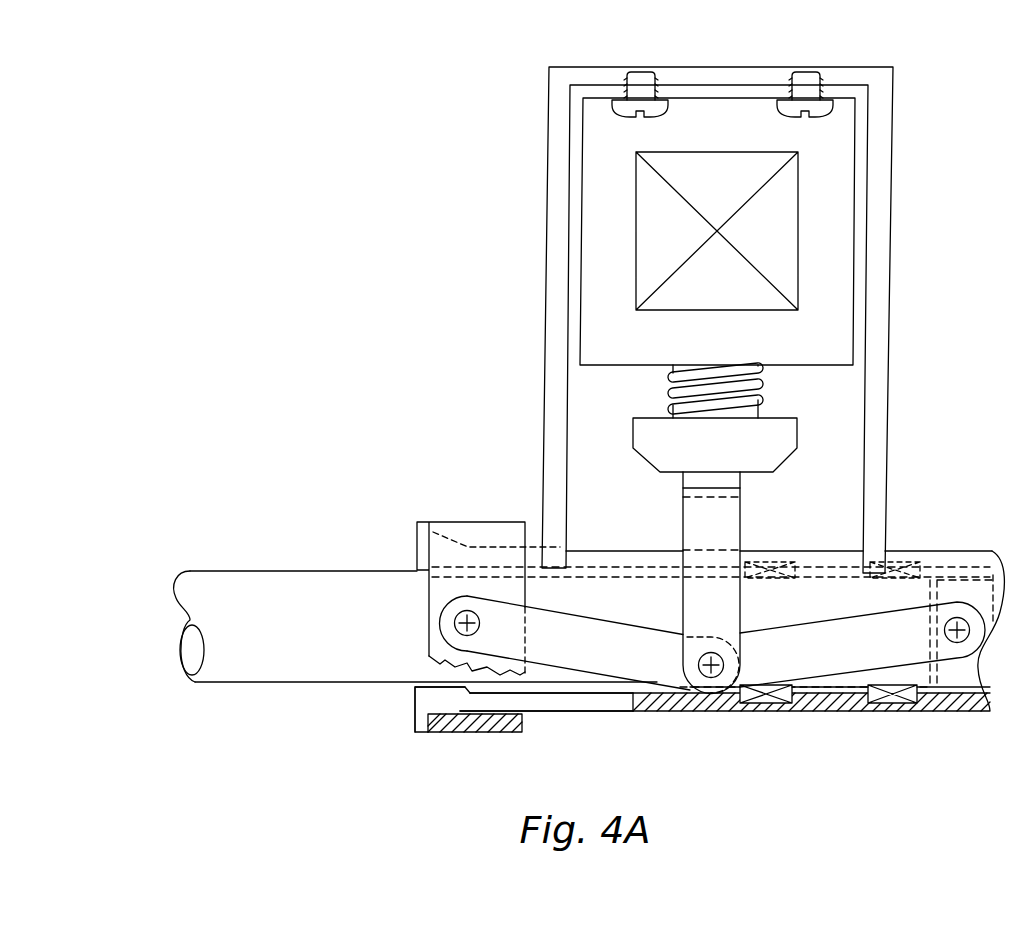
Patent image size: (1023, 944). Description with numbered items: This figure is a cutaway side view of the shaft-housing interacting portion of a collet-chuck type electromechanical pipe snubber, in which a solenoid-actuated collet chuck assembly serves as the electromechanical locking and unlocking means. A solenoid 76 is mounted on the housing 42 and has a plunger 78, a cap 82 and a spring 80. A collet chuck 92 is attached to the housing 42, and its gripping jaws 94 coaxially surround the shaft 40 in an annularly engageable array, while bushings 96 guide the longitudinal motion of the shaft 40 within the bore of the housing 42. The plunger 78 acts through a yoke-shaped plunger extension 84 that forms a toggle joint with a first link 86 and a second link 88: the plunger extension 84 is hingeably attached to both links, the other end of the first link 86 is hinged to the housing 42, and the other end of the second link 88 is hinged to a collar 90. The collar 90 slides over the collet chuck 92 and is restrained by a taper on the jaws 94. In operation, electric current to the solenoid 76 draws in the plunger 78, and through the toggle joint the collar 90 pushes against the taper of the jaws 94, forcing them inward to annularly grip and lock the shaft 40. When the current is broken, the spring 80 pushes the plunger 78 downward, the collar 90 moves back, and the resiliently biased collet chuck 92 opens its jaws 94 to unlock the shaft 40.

The shaft 40 is at (358, 666).
The housing 42 is at (877, 228).
The solenoid 76 is at (610, 227).
The plunger 78 is at (670, 378).
The spring 80 is at (670, 407).
The cap 82 is at (652, 440).
The plunger extension 84 is at (725, 533).
The first link 86 is at (823, 663).
The second link 88 is at (628, 663).
The collar 90 is at (483, 532).
The collet chuck 92 is at (565, 702).
The collet chuck gripping jaws 94 is at (427, 703).
The bushings 96 is at (790, 698).